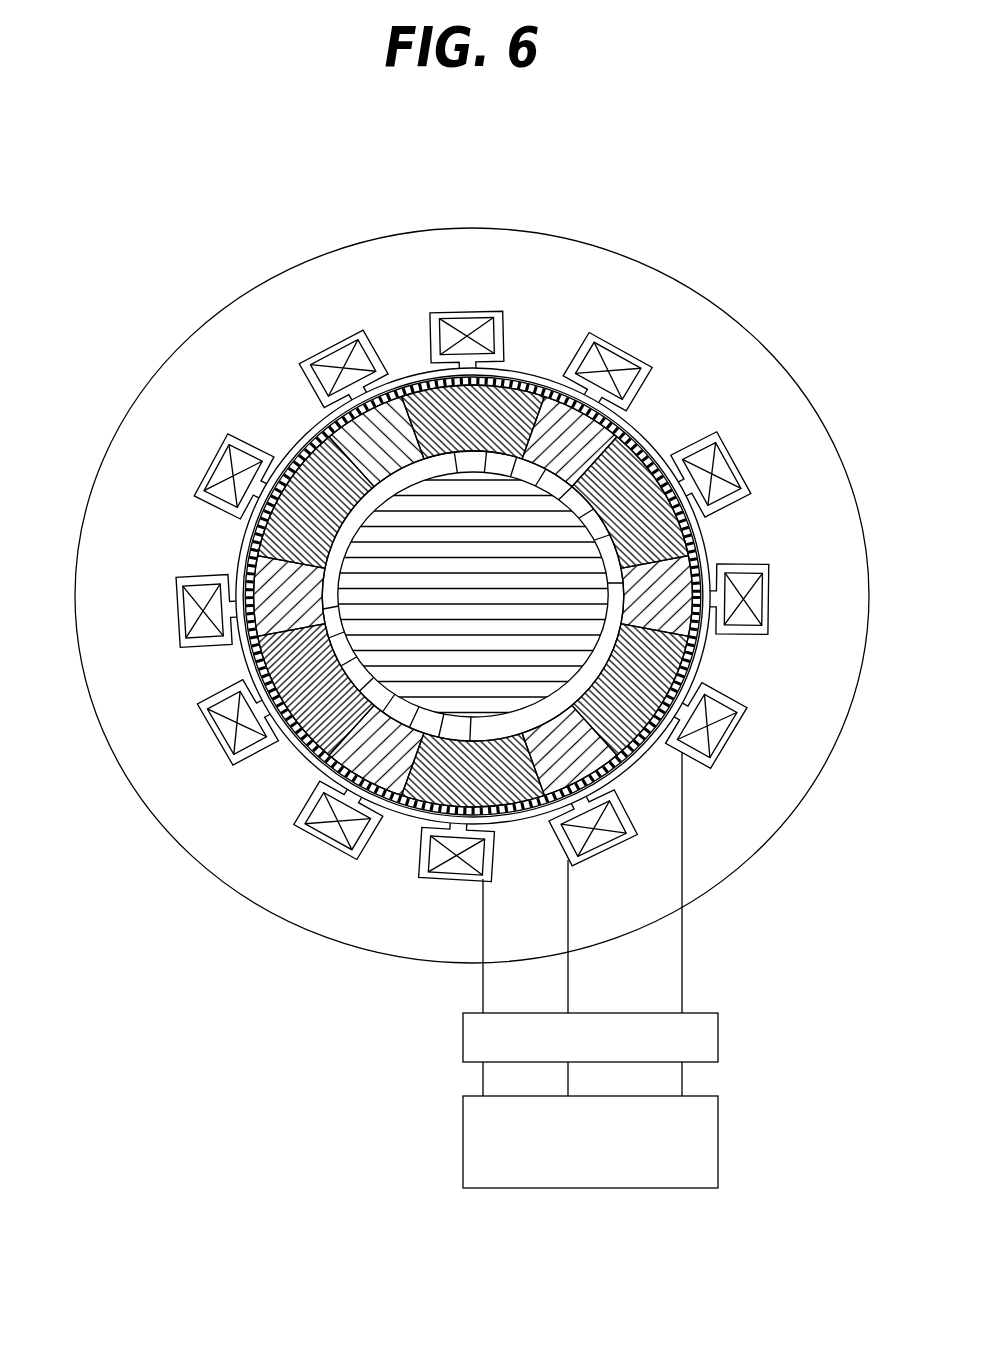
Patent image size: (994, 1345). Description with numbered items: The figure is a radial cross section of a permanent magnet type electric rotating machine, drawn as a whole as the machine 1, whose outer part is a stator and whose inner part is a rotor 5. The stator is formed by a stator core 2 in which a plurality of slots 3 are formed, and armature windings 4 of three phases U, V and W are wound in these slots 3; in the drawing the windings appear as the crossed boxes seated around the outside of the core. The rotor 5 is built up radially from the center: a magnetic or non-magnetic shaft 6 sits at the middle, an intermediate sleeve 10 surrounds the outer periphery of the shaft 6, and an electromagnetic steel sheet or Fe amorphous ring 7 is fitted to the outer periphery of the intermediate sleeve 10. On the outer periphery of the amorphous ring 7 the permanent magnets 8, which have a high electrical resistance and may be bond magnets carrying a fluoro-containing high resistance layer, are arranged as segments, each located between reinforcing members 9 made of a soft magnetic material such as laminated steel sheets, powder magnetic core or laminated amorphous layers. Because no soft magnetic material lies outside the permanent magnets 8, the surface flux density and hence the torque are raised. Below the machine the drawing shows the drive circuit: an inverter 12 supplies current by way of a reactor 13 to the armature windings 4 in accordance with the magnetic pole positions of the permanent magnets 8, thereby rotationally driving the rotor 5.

The motor 1 is at (733, 318).
The stator core 2 is at (473, 596).
The slots 3 is at (472, 596).
The armature windings 4 is at (473, 596).
The rotor 5 is at (472, 596).
The shaft 6 is at (473, 594).
The amorphous ring 7 is at (473, 596).
The permanent magnet 8 is at (473, 596).
The reinforcing members 9 is at (473, 596).
The intermediate sleeve 10 is at (473, 596).
The inverter 12 is at (707, 1143).
The reactor 13 is at (708, 1040).